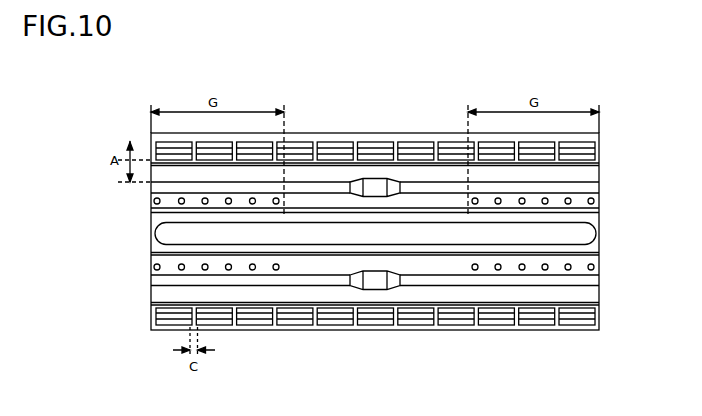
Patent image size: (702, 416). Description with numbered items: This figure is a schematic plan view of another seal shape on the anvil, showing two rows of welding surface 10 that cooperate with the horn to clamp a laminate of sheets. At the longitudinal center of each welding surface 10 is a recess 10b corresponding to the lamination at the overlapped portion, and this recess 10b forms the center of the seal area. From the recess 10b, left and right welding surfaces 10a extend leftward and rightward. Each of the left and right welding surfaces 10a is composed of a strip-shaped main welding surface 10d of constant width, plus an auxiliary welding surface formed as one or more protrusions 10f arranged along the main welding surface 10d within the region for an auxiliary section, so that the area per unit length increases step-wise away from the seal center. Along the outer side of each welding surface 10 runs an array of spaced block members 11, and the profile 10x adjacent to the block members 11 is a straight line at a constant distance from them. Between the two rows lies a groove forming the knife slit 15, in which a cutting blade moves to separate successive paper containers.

The welding surface 10 is at (150, 197).
The left and right welding surfaces 10a is at (335, 70).
The recess 10b is at (377, 186).
The main welding surface 10d is at (300, 185).
The protrusions 10f is at (253, 198).
The profile 10x is at (590, 182).
The block members 11 is at (545, 151).
The knife slit 15 is at (597, 233).